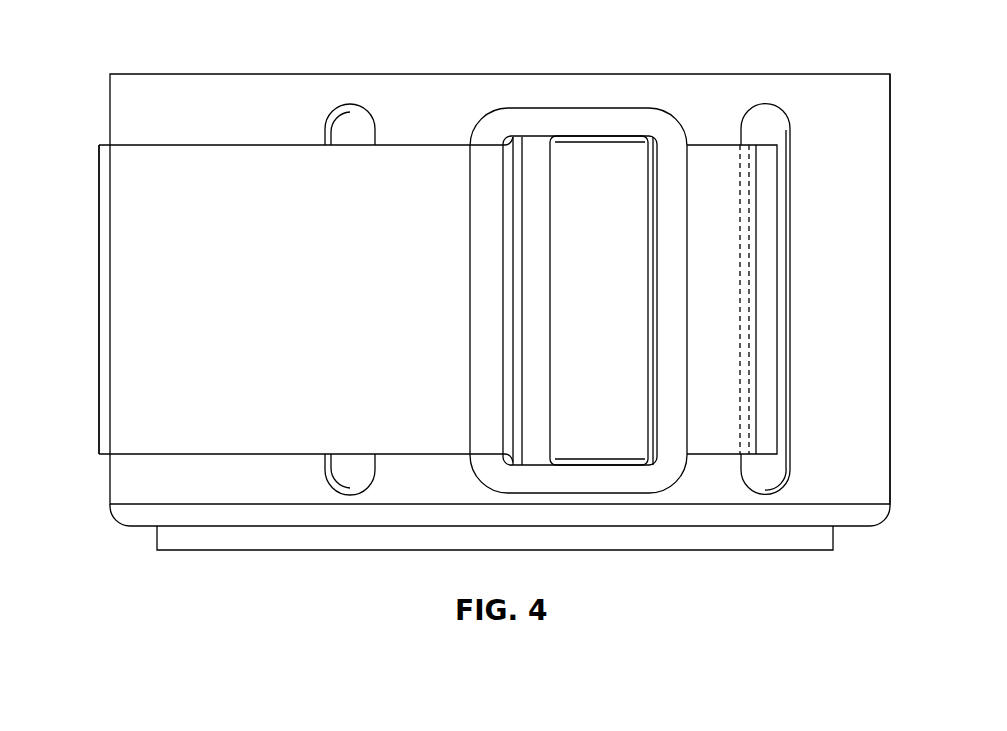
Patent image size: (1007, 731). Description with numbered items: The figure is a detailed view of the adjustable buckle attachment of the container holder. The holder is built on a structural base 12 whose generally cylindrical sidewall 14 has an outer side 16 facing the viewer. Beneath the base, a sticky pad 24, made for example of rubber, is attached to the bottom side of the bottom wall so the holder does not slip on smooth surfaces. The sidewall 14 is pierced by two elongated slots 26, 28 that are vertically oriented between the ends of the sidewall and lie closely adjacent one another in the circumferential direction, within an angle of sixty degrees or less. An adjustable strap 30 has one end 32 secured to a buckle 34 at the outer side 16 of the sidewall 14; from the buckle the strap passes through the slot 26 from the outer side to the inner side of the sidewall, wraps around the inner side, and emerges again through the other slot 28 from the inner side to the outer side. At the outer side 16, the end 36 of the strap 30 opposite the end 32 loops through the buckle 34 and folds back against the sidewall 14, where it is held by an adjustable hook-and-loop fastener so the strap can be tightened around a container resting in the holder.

The structural base 12 is at (857, 45).
The cylindrical sidewall 14 is at (160, 73).
The outer side 16 is at (880, 165).
The sticky pad 24 is at (428, 538).
The elongated slot 26 is at (760, 115).
The elongated slot 28 is at (350, 117).
The adjustable strap 30 is at (423, 330).
The strap end 32 is at (720, 160).
The buckle 34 is at (605, 117).
The strap end 36 is at (98, 298).